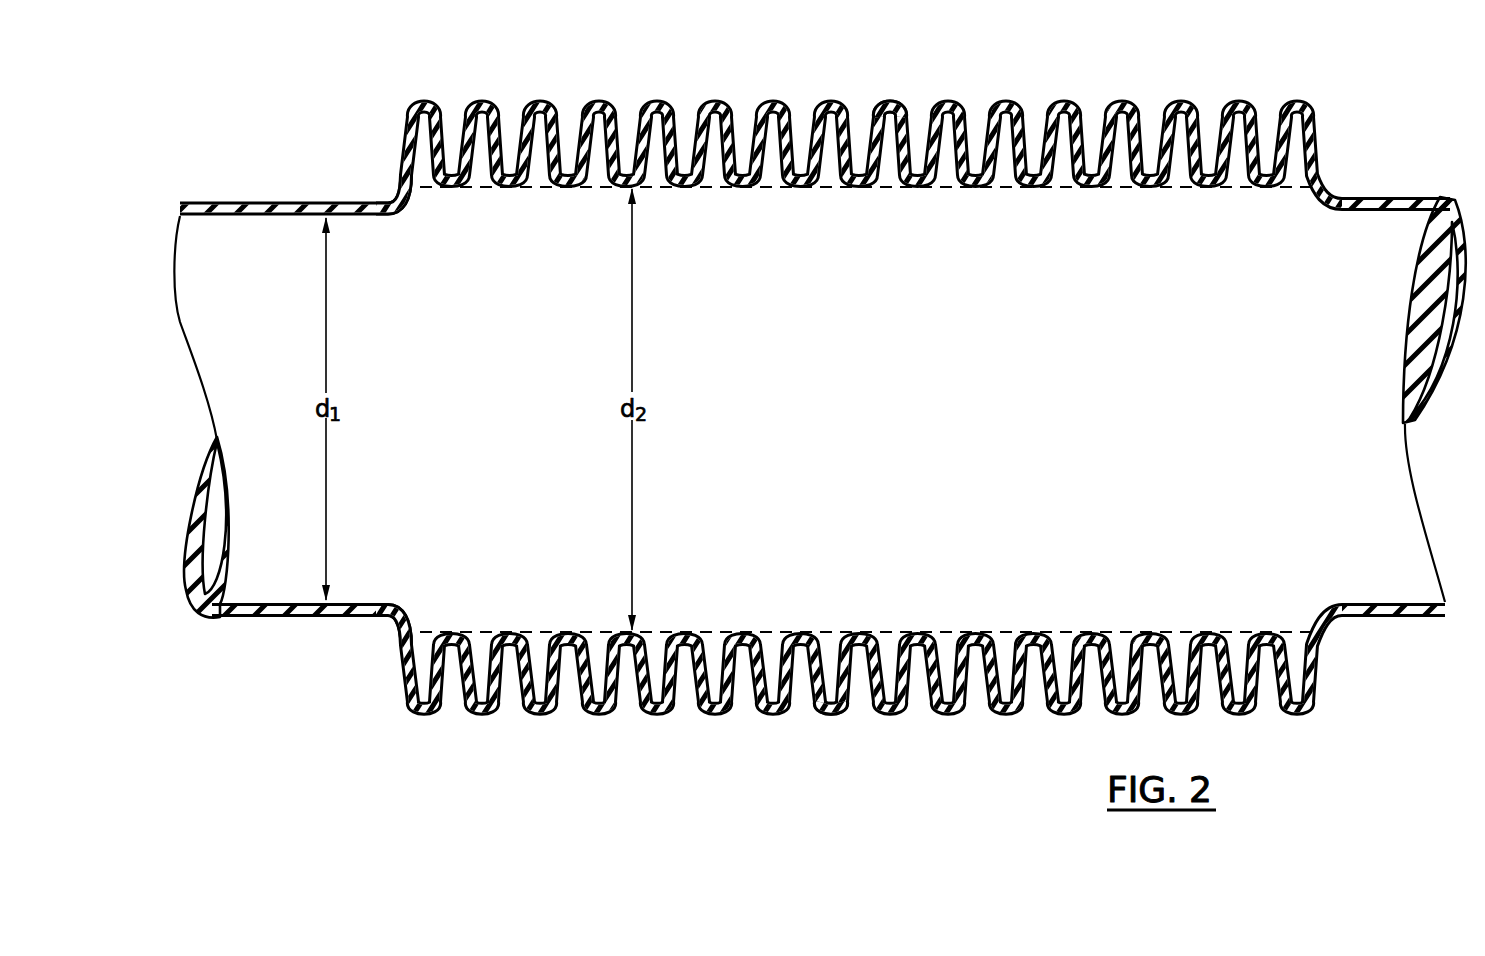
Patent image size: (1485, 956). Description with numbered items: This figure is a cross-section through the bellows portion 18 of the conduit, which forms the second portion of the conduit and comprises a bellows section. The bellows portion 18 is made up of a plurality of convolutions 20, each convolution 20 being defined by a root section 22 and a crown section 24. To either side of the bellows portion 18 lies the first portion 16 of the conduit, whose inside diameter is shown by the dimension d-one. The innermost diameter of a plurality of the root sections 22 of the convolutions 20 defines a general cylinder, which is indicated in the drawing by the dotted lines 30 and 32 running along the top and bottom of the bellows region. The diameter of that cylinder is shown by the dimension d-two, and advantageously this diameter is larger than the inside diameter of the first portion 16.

The first portion 16 is at (273, 201).
The bellows portion 18 is at (681, 58).
The convolutions 20 is at (912, 127).
The root section 22 is at (865, 189).
The crown section 24 is at (890, 105).
The dotted line 30 is at (472, 190).
The dotted line 32 is at (430, 631).